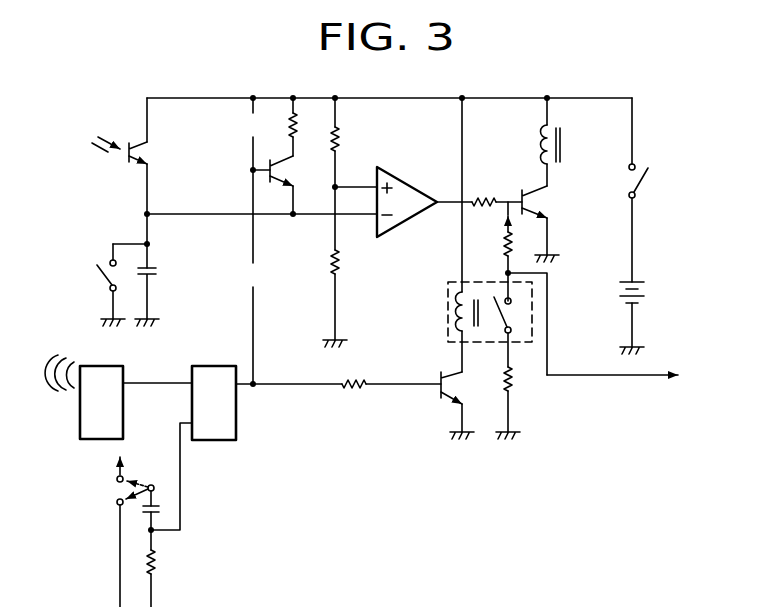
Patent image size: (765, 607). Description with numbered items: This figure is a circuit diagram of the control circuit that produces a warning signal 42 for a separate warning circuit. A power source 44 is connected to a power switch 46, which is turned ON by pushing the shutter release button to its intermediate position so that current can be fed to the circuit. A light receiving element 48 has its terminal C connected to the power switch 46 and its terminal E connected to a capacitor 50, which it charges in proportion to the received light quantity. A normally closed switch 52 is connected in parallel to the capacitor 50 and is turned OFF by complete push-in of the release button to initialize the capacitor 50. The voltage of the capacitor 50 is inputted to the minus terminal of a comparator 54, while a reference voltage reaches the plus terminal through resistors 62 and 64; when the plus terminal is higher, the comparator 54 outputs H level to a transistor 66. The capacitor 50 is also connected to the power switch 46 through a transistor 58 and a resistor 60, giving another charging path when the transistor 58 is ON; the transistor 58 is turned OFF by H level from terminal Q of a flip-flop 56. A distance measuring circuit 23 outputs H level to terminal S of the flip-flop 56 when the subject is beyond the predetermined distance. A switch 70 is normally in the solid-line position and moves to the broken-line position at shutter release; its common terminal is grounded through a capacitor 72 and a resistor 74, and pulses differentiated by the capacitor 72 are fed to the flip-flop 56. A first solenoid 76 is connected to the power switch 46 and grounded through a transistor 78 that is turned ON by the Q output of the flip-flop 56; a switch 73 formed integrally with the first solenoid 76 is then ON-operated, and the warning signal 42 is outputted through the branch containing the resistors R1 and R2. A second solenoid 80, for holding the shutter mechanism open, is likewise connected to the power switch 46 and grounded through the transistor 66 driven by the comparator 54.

The distance measuring circuit 23 is at (80, 417).
The warning signal 42 is at (645, 380).
The power source 44 is at (655, 290).
The power switch 46 is at (628, 184).
The light receiving element 48 is at (150, 150).
The capacitor 50 is at (158, 270).
The normally closed switch 52 is at (100, 283).
The comparator 54 is at (416, 185).
The flip-flop 56 is at (237, 426).
The transistor 58 is at (288, 170).
The resistor 60 is at (302, 130).
The resistor 62 is at (347, 145).
The resistor 64 is at (350, 262).
The transistor 66 is at (547, 206).
The switch 70 is at (117, 492).
The capacitor 72 is at (168, 508).
The switch 73 is at (515, 310).
The resistor 74 is at (160, 572).
The first solenoid 76 is at (472, 285).
The transistor 78 is at (438, 378).
The second solenoid 80 is at (567, 145).
The resistor R1 is at (521, 236).
The resistor R2 is at (522, 382).